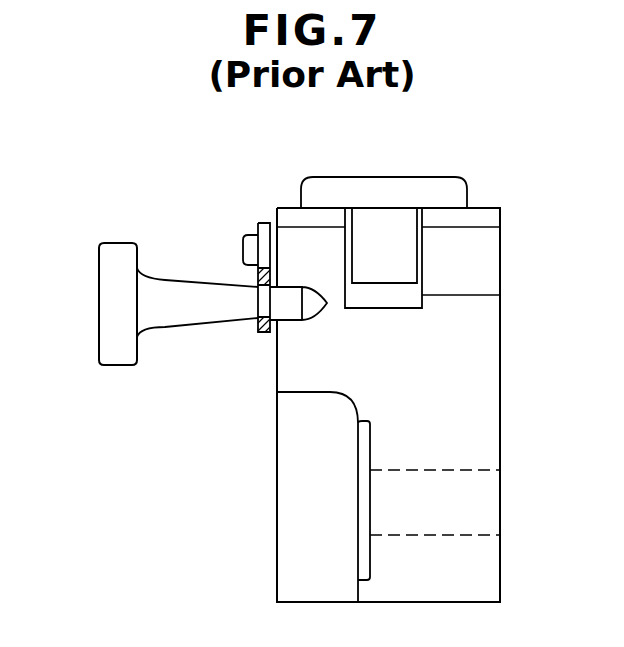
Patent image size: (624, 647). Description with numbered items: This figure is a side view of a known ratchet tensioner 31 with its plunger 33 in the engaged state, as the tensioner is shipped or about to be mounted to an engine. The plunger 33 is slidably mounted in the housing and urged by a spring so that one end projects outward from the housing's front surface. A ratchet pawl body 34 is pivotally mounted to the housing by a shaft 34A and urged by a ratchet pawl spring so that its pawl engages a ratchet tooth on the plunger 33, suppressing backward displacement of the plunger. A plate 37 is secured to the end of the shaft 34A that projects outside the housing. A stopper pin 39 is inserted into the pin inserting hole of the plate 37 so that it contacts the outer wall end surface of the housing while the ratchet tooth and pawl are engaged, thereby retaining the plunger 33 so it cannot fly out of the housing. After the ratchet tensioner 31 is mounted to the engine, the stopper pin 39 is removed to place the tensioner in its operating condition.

The ratchet tensioner 31 is at (510, 333).
The plunger 33 is at (428, 187).
The ratchet pawl body 34 is at (367, 227).
The shaft 34A is at (245, 248).
The plate 37 is at (258, 223).
The stopper pin 39 is at (108, 311).